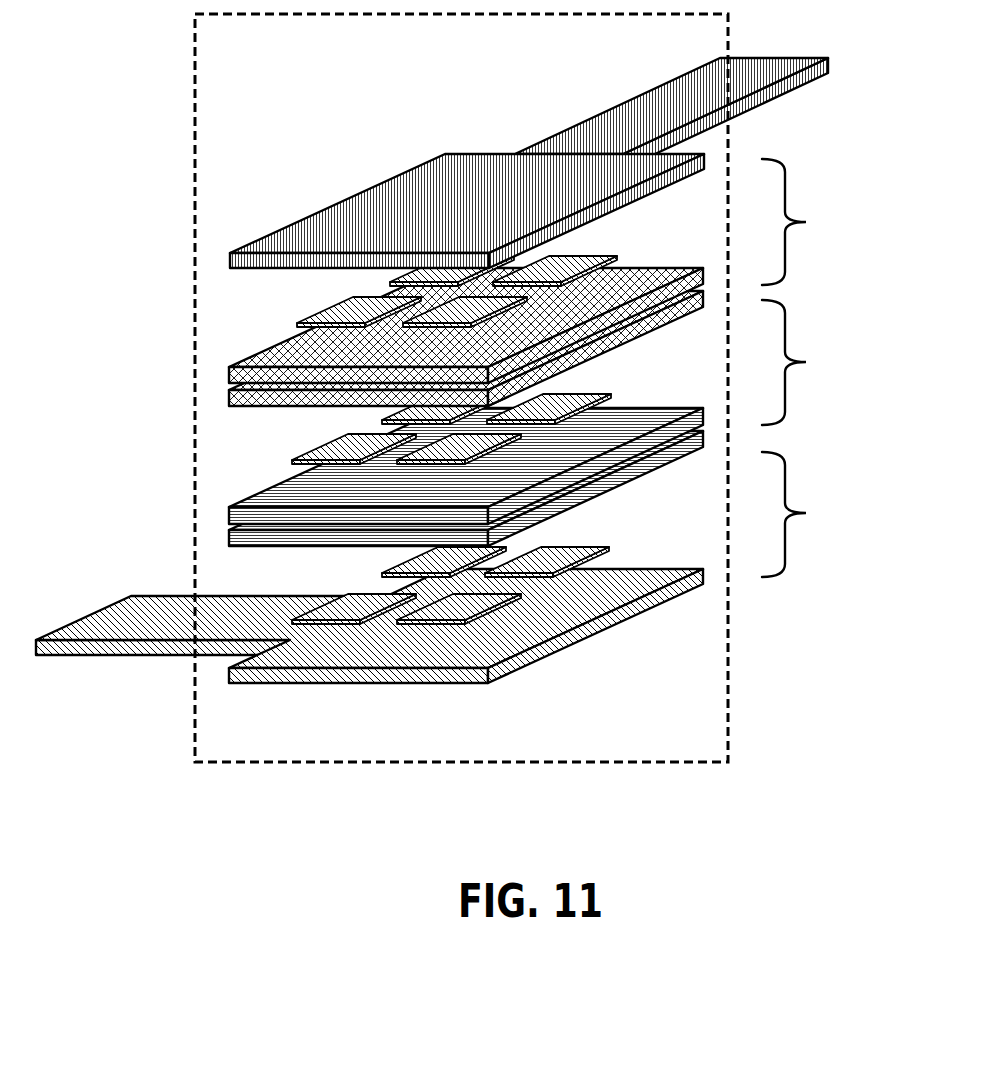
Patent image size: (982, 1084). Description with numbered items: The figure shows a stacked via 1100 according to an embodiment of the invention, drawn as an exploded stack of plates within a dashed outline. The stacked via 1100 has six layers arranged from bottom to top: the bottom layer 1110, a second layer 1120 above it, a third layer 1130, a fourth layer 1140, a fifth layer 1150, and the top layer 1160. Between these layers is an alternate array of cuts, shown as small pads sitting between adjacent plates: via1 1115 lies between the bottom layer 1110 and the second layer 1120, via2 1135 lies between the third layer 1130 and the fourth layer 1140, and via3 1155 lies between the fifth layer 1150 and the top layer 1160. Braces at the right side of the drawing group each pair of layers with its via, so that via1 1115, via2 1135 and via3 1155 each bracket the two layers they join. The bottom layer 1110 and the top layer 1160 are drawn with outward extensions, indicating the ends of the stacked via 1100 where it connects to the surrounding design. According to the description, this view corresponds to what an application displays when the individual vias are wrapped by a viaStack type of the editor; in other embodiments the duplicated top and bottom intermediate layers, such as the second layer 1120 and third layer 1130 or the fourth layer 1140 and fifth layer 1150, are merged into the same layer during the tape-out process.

The stacked via 1100 is at (637, 763).
The bottom layer 1110 is at (628, 615).
The via1 1115 is at (809, 514).
The second layer 1120 is at (643, 473).
The third layer 1130 is at (642, 420).
The via2 1135 is at (809, 362).
The fourth layer 1140 is at (660, 330).
The fifth layer 1150 is at (665, 270).
The via3 1155 is at (809, 222).
The top layer 1160 is at (323, 222).